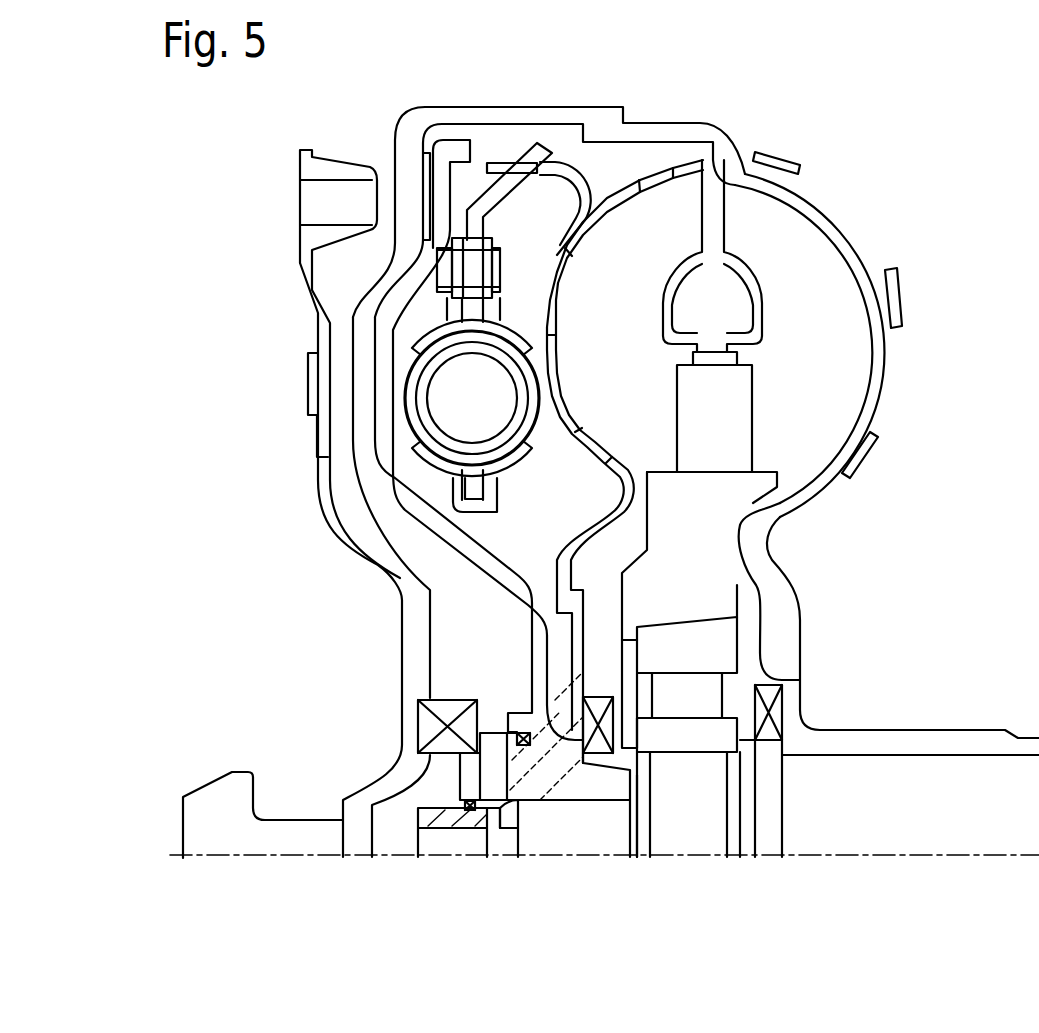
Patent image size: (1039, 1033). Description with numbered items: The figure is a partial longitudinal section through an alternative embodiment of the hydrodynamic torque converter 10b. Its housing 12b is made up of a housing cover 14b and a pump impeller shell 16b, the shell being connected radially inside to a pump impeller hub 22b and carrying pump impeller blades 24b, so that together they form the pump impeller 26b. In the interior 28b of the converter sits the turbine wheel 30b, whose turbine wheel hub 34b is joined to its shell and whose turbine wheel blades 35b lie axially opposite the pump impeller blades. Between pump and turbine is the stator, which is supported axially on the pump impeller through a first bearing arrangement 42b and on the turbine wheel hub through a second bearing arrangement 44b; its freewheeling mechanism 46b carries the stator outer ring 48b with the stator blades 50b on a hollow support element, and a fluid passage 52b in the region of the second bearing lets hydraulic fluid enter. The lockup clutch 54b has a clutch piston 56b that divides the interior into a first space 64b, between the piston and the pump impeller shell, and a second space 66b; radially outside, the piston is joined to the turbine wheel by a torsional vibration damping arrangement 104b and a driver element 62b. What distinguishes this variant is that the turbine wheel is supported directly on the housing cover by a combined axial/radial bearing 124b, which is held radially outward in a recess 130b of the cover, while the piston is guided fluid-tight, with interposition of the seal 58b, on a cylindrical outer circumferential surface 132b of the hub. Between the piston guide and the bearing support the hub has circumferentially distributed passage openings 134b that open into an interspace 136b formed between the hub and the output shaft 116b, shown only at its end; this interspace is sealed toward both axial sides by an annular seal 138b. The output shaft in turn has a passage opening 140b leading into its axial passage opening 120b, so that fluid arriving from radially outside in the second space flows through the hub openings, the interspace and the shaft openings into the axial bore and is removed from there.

The hydrodynamic torque converter 10b is at (882, 132).
The housing 12b is at (648, 106).
The housing cover 14b is at (327, 468).
The pump impeller shell 16b is at (893, 381).
The pump impeller hub 22b is at (913, 730).
The pump impeller blades 24b is at (808, 245).
The pump impeller 26b is at (907, 438).
The interior 28b is at (747, 328).
The turbine wheel 30b is at (567, 483).
The turbine wheel hub 34b is at (612, 778).
The turbine wheel blades 35b is at (638, 339).
The first bearing arrangement 42b is at (772, 707).
The second bearing arrangement 44b is at (627, 625).
The freewheeling mechanism 46b is at (730, 691).
The stator outer ring 48b is at (717, 542).
The stator blades 50b is at (738, 423).
The fluid passage 52b is at (595, 700).
The lockup clutch 54b is at (418, 150).
The clutch piston 56b is at (383, 388).
The seal 58b is at (520, 733).
The driver element 62b is at (587, 196).
The first space 64b is at (840, 283).
The second space 66b is at (456, 610).
The torsional vibration damping arrangement 104b is at (516, 272).
The output shaft 116b is at (490, 831).
The axial passage opening 120b is at (487, 843).
The combined axial/radial bearing 124b is at (430, 722).
The recess 130b is at (417, 733).
The cylindrical outer circumferential surface 132b is at (640, 712).
The passage openings 134b is at (495, 768).
The interspace 136b is at (487, 812).
The annular seal 138b is at (475, 806).
The passage opening 140b is at (505, 830).